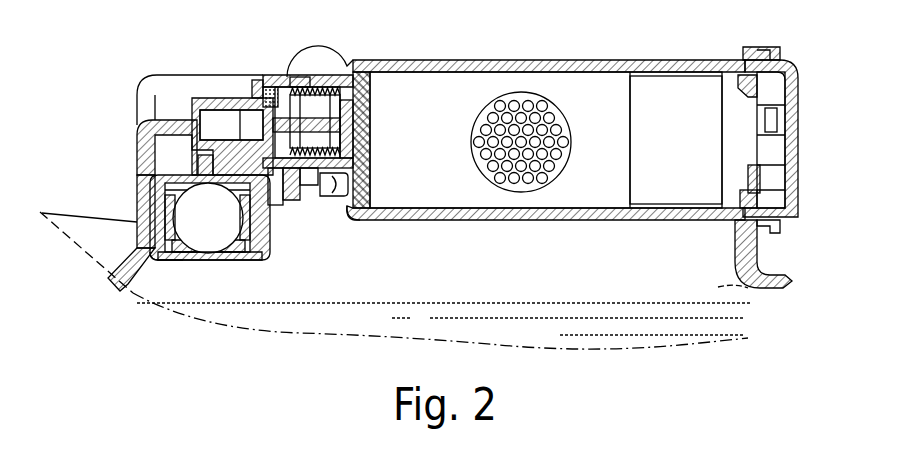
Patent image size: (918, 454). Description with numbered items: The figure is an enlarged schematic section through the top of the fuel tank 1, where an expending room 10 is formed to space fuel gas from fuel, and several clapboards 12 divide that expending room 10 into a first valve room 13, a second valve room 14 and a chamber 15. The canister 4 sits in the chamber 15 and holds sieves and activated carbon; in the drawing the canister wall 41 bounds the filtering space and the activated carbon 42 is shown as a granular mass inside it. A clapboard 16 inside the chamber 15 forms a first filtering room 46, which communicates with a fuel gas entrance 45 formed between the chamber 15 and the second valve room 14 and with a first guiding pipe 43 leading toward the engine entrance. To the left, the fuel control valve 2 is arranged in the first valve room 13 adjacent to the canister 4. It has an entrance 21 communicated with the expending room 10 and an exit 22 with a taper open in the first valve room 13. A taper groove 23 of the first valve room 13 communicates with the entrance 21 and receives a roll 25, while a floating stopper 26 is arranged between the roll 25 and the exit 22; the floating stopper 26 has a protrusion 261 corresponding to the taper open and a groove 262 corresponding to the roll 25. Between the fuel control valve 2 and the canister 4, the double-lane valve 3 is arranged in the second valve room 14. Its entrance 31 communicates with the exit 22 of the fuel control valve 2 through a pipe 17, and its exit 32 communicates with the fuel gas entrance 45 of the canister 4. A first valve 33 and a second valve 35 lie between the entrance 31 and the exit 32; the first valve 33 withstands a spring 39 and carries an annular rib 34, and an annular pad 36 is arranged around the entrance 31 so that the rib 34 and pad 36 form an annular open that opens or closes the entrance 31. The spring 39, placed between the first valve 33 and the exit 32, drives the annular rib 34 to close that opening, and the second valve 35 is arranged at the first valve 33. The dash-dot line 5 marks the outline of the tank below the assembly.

The fuel tank 1 is at (775, 259).
The fuel control valve 2 is at (133, 147).
The double-lane valve 3 is at (281, 66).
The canister 4 is at (575, 60).
The centerline / sheet boundary 5 is at (277, 320).
The expending room 10 is at (808, 252).
The clapboard 12 is at (250, 262).
The first valve room 13 is at (167, 128).
The second valve room 14 is at (298, 83).
The chamber 15 is at (632, 103).
The clapboard 16 is at (645, 95).
The pipe 17 is at (217, 122).
The entrance 21 is at (203, 257).
The exit 22 is at (187, 117).
The taper groove 23 is at (183, 263).
The roll 25 is at (133, 248).
The floating stopper 26 is at (163, 182).
The entrance 31 is at (256, 123).
The exit 32 is at (333, 90).
The first valve 33 is at (290, 170).
The annular rib 34 is at (278, 173).
The second valve 35 is at (274, 84).
The annular pad 36 is at (252, 93).
The spring 39 is at (304, 106).
The filter wall 41 is at (373, 97).
The granular material 42 is at (523, 97).
The first guiding pipe 43 is at (372, 182).
The fuel gas entrance 45 is at (333, 113).
The first filtering room 46 is at (462, 93).
The protrusion 261 is at (197, 165).
The groove 262 is at (173, 202).